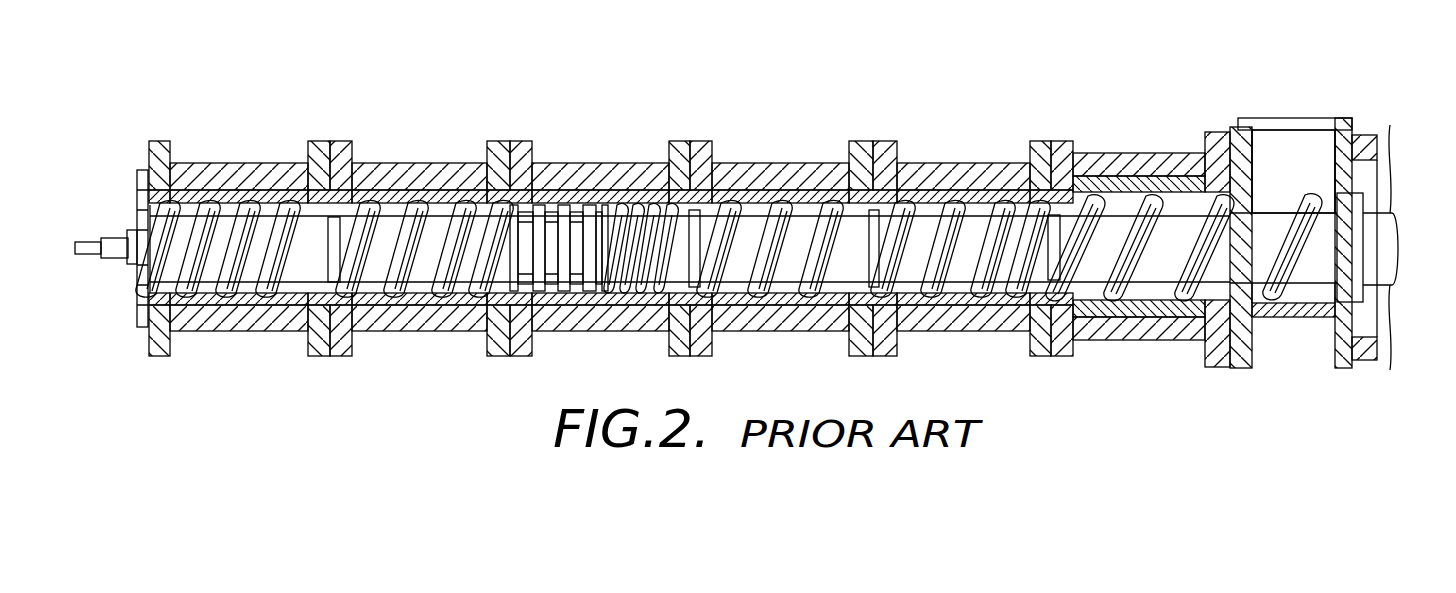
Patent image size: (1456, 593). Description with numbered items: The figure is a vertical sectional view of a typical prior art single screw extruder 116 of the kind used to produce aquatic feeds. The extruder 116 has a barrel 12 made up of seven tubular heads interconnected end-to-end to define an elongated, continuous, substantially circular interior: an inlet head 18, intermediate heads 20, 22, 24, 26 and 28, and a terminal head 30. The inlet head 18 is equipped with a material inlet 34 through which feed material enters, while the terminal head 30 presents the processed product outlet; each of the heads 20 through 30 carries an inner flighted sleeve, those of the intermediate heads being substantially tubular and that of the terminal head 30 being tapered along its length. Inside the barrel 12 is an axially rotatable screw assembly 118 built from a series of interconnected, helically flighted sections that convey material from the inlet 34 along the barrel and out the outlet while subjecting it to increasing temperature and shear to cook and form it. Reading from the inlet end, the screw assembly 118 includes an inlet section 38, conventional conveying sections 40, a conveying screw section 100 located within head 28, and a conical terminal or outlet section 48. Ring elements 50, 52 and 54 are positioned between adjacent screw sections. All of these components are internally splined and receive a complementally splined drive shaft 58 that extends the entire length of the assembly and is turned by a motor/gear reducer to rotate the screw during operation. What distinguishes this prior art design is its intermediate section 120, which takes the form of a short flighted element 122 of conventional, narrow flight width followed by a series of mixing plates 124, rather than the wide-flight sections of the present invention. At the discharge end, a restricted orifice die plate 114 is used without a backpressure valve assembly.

The barrel 12 is at (1133, 143).
The inlet head 18 is at (1305, 318).
The tubular head 20 is at (1185, 325).
The tubular head 22 is at (970, 320).
The tubular head 24 is at (760, 320).
The tubular head 26 is at (565, 318).
The tubular head 28 is at (435, 320).
The terminal head 30 is at (232, 320).
The material inlet 34 is at (1325, 125).
The inlet section 38 is at (1173, 230).
The conveying section 40 is at (800, 230).
The outlet section 48 is at (219, 200).
The ring element 50 is at (1055, 258).
The ring element 52 is at (870, 265).
The ring element 54 is at (696, 225).
The drive shaft 58 is at (1385, 255).
The conveying screw section 100 is at (373, 220).
The restricted orifice die plate 114 is at (135, 278).
The prior art extruder 116 is at (345, 98).
The screw assembly 118 is at (1272, 200).
The intermediate section 120 is at (644, 155).
The short flighted element 122 is at (645, 287).
The mixing plates 124 is at (563, 212).